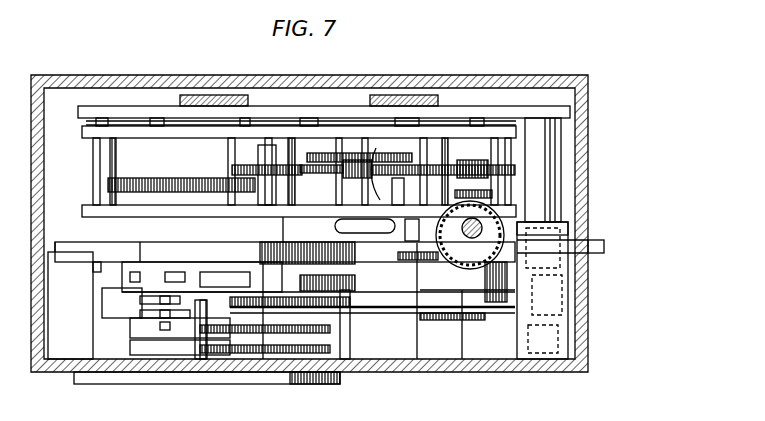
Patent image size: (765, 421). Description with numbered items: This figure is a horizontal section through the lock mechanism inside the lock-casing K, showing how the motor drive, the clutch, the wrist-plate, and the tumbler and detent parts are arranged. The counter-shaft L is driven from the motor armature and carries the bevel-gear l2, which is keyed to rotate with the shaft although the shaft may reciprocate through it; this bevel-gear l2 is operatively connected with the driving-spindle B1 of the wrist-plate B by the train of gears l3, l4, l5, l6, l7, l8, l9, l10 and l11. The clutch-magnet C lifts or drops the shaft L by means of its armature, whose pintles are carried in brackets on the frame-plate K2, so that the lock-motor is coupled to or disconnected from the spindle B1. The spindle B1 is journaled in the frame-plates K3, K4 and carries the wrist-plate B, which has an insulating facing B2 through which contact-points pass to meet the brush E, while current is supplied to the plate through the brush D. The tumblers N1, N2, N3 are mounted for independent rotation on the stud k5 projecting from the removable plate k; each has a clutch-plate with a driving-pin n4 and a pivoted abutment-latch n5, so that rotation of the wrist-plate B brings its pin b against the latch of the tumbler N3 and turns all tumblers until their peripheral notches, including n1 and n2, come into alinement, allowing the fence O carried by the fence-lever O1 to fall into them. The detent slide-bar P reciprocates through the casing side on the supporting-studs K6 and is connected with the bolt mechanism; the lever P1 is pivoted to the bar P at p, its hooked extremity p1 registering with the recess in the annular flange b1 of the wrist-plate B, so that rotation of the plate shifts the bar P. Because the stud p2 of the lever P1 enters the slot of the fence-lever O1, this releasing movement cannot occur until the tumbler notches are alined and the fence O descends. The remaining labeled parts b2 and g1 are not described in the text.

The lock-casing K is at (398, 78).
The frame-plate K2 is at (170, 113).
The frame-plate K3 is at (88, 132).
The frame-plate K4 is at (88, 211).
The supporting-studs K6 is at (542, 176).
The plate k is at (270, 378).
The stud k5 is at (417, 225).
The bevel-gear l2 is at (462, 227).
The gear l3 is at (455, 193).
The gear l4 is at (490, 168).
The gear l5 is at (400, 178).
The gear l6 is at (432, 166).
The gear l7 is at (350, 160).
The gear l8 is at (325, 153).
The gear l9 is at (262, 166).
The gear l10 is at (285, 220).
The gear l11 is at (157, 178).
The clutch-magnet C is at (382, 190).
The counter-shaft L is at (472, 232).
The wrist-plate B is at (168, 244).
The driving-spindle B1 is at (225, 230).
The facing B2 is at (140, 244).
The pin b is at (167, 280).
The annular flange b1 is at (137, 280).
The bar b2 is at (195, 282).
The lever g1 is at (338, 226).
The brush D is at (390, 236).
The detent slide-bar P is at (604, 247).
The lever P1 is at (375, 280).
The pivot p is at (480, 300).
The hooked extremity p1 is at (225, 280).
The stud p2 is at (290, 290).
The fence O is at (203, 362).
The fence-lever O1 is at (398, 300).
The brush E is at (105, 272).
The tumbler N1 is at (330, 349).
The tumbler N2 is at (330, 329).
The tumbler N3 is at (142, 300).
The peripheral notch n1 is at (192, 362).
The peripheral notch n2 is at (222, 362).
The driving-pin n4 is at (142, 313).
The abutment-latch n5 is at (172, 362).